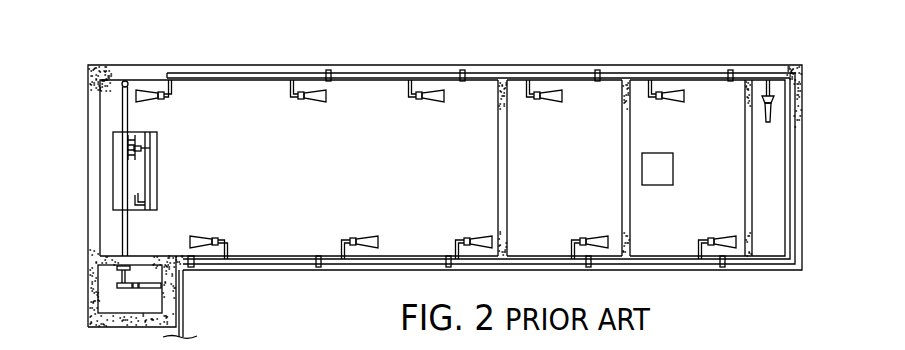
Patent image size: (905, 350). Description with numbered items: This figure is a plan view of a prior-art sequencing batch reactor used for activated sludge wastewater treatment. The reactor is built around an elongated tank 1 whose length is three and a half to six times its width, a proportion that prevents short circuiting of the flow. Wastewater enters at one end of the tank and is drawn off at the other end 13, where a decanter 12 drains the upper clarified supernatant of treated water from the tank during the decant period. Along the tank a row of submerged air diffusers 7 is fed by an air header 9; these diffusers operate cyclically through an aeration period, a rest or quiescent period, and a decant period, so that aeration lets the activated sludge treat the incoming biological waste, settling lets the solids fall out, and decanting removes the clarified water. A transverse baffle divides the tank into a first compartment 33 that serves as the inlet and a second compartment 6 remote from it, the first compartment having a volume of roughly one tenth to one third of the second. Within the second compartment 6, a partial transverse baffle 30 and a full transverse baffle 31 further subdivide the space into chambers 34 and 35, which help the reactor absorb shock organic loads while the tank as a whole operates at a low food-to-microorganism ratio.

The tank 1 is at (130, 37).
The second compartment 6 is at (318, 171).
The submerged air diffusers 7 is at (150, 103).
The air header 9 is at (242, 72).
The decanter 12 is at (157, 163).
The other end 13 is at (88, 141).
The partial transverse baffle 30 is at (622, 137).
The full transverse baffle 31 is at (498, 145).
The first compartment 33 is at (773, 218).
The chamber 34 is at (723, 171).
The chamber 35 is at (566, 212).